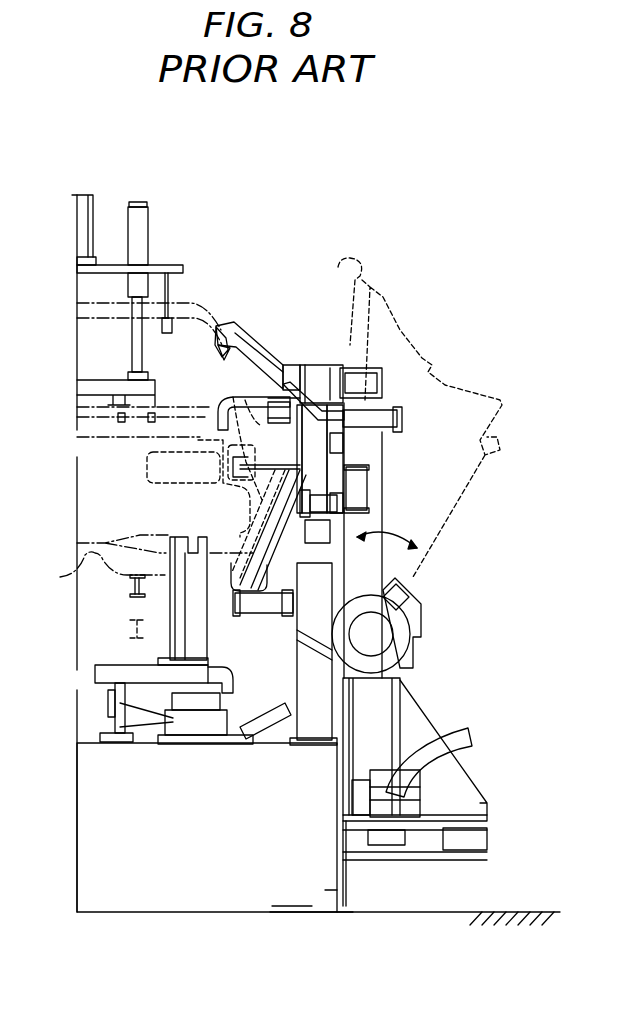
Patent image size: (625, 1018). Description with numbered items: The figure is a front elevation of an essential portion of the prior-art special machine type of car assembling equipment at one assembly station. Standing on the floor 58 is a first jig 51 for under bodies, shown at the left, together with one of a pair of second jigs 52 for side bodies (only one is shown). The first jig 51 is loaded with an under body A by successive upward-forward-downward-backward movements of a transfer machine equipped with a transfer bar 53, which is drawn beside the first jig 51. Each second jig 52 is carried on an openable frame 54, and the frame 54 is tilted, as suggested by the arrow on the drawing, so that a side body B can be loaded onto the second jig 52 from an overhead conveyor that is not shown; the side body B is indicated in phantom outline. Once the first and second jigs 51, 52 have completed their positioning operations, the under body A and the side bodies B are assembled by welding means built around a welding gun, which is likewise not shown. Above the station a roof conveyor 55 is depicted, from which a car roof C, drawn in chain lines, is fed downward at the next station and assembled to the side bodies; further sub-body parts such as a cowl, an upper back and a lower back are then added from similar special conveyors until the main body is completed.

The first jig 51 is at (212, 650).
The second jig 52 is at (243, 333).
The transfer bar 53 is at (133, 590).
The openable frame 54 is at (383, 501).
The roof conveyor 55 is at (185, 265).
The floor 58 is at (530, 912).
The under body A is at (87, 558).
The side body B is at (370, 262).
The car roof C is at (94, 302).